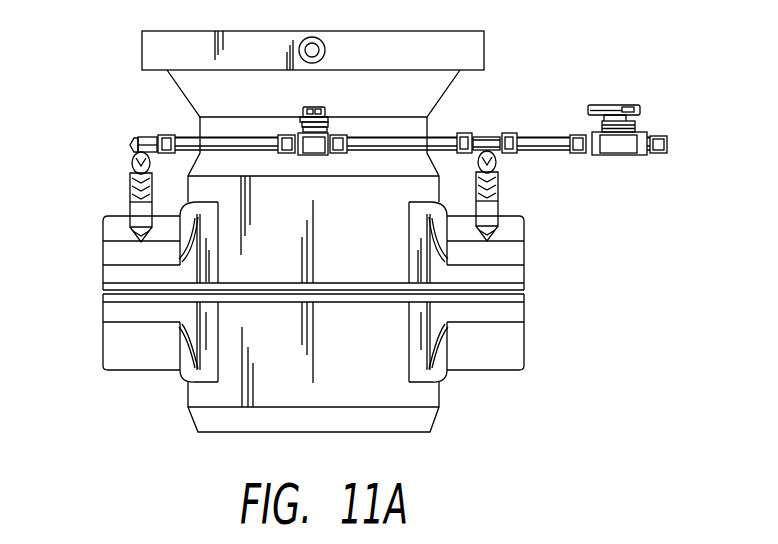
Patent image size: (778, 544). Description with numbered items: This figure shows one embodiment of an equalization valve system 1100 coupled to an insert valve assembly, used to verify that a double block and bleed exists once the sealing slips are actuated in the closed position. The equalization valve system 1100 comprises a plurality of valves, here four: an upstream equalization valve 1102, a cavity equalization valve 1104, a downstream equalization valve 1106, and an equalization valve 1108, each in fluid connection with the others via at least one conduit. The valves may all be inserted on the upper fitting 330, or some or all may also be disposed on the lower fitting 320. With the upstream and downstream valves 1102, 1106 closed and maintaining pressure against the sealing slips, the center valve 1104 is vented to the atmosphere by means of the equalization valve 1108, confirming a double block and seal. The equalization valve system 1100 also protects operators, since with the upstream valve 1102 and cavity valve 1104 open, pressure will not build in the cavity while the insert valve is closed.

The equalization valve system 1100 is at (656, 70).
The upstream equalization valve 1102 is at (136, 140).
The cavity equalization valve 1104 is at (352, 96).
The downstream equalization valve 1106 is at (494, 135).
The equalization valve 1108 is at (618, 156).
The upper fitting 330 is at (103, 242).
The lower fitting 320 is at (103, 308).